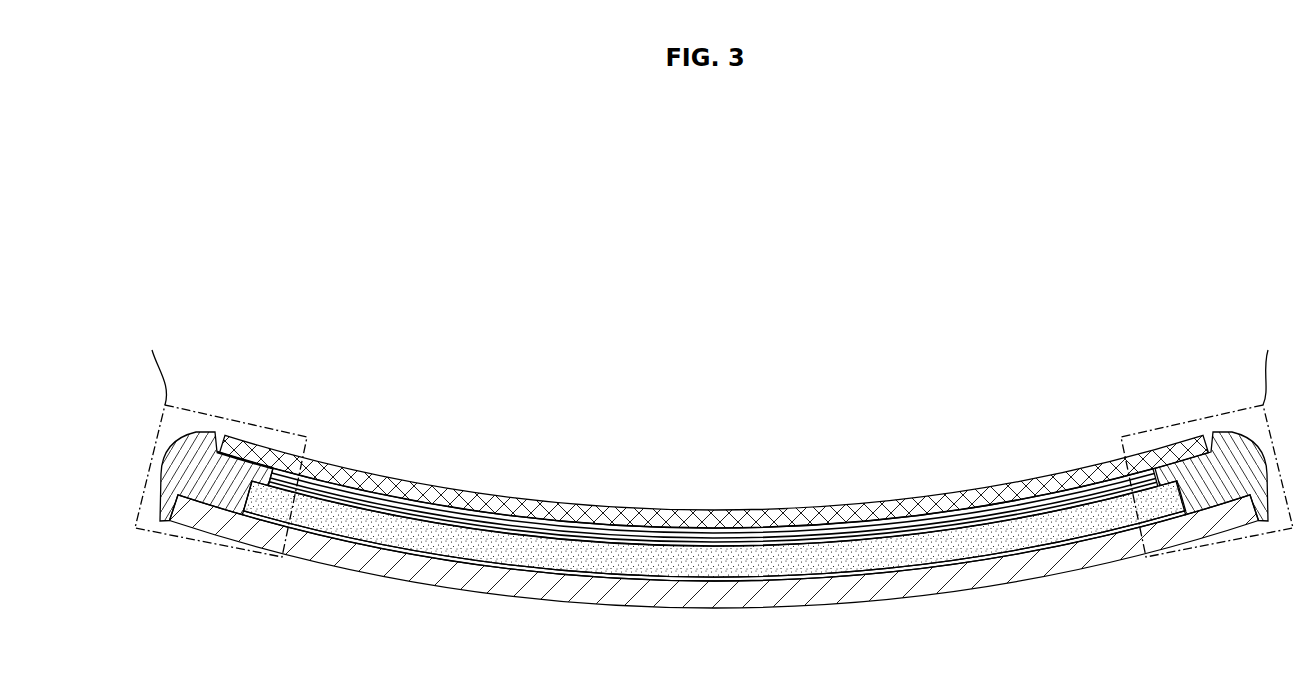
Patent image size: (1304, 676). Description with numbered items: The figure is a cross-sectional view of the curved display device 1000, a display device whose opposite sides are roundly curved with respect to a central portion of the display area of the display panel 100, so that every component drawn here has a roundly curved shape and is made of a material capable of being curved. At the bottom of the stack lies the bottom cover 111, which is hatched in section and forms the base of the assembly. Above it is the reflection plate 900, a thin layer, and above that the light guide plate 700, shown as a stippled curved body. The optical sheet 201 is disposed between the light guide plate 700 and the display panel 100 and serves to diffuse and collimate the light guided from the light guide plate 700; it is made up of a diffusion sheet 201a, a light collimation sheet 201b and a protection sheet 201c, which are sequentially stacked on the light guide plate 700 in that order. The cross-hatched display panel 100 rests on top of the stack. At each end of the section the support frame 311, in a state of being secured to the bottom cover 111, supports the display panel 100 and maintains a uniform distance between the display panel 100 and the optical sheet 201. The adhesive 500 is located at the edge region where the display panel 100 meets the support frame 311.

The curved display device 1000 is at (558, 296).
The display panel 100 is at (403, 481).
The adhesive 500 is at (258, 450).
The support frame 311 is at (192, 478).
The optical sheet 201 is at (749, 441).
The diffusion sheet 201a is at (591, 524).
The light collimation sheet 201b is at (677, 537).
The protection sheet 201c is at (745, 543).
The light guide plate 700 is at (681, 562).
The reflection plate 900 is at (786, 578).
The bottom cover 111 is at (568, 588).